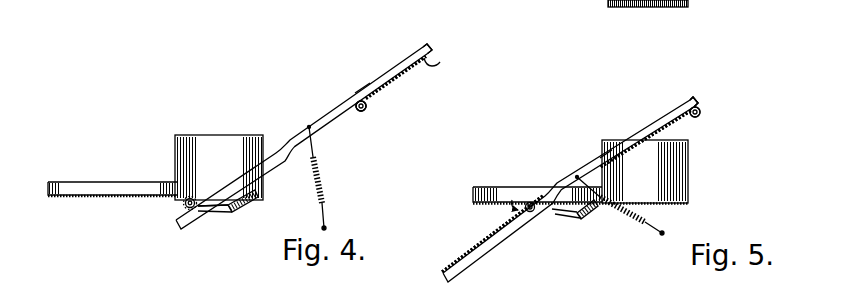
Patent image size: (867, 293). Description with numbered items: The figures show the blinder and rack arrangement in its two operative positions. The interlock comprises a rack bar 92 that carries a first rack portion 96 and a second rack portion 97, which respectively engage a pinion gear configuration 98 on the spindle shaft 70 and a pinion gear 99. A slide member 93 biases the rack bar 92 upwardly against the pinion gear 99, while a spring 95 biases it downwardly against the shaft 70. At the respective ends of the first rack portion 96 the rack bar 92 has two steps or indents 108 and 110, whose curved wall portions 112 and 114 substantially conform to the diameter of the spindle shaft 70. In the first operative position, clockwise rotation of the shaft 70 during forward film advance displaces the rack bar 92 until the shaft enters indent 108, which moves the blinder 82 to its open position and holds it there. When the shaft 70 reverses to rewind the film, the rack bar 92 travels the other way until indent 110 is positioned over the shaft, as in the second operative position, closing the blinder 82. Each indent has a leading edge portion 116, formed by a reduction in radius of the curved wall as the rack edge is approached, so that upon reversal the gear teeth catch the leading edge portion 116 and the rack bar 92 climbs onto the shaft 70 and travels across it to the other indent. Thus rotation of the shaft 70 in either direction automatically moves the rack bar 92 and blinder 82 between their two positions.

In FIG. 4, the spindle shaft 70 is at (369, 122).
In FIG. 5, the spindle shaft 70 is at (690, 122).
In FIG. 4, the blinder 82 is at (106, 180).
In FIG. 5, the blinder 82 is at (499, 184).
In FIG. 4, the rack bar 92 is at (397, 65).
In FIG. 5, the rack bar 92 is at (650, 127).
In FIG. 4, the slide member 93 is at (217, 212).
In FIG. 5, the slide member 93 is at (555, 214).
In FIG. 4, the spring 95 is at (320, 182).
In FIG. 5, the spring 95 is at (610, 214).
In FIG. 4, the first rack portion 96 is at (422, 69).
In FIG. 5, the first rack portion 96 is at (660, 152).
In FIG. 4, the second rack portion 97 is at (228, 186).
In FIG. 5, the second rack portion 97 is at (480, 248).
In FIG. 4, the pinion gear configuration 98 is at (362, 112).
In FIG. 5, the pinion gear configuration 98 is at (703, 112).
In FIG. 4, the pinion gear 99 is at (198, 209).
In FIG. 4, the indent 108 is at (355, 104).
In FIG. 5, the indent 108 is at (672, 284).
In FIG. 4, the indent 110 is at (421, 45).
In FIG. 5, the indent 110 is at (689, 97).
In FIG. 4, the curved wall portion 112 is at (365, 93).
In FIG. 5, the curved wall portion 112 is at (603, 155).
In FIG. 4, the curved wall portion 114 is at (426, 57).
In FIG. 5, the curved wall portion 114 is at (703, 96).
In FIG. 4, the leading edge portion 116 is at (428, 64).